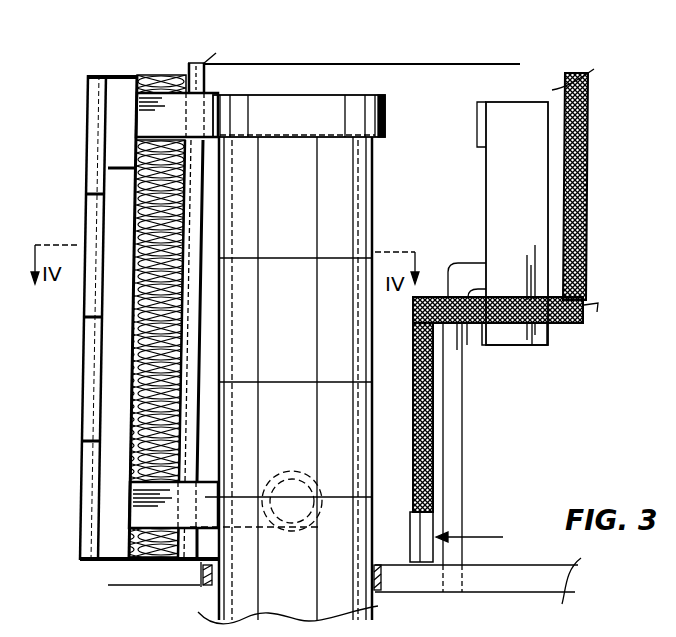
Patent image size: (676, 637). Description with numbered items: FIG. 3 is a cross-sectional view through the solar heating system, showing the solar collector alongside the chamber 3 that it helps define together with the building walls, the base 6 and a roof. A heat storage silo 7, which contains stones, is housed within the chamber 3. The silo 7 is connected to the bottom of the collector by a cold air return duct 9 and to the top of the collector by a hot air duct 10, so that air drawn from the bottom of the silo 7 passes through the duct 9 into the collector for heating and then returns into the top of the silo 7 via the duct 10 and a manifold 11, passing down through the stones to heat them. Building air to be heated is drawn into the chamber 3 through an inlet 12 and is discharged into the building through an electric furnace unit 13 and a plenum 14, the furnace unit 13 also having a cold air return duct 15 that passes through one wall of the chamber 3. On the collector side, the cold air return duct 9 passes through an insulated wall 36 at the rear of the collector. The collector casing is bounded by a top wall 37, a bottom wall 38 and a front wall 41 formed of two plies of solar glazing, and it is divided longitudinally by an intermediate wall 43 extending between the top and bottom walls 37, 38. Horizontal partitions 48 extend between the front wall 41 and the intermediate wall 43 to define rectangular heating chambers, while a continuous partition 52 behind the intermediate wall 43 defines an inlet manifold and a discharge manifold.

The chamber 3 is at (390, 553).
The base 6 is at (192, 575).
The heat storage silo 7 is at (294, 231).
The cold air return duct 9 is at (203, 503).
The hot air duct 10 is at (213, 97).
The manifold 11 is at (311, 108).
The inlet 12 is at (425, 527).
The electric furnace unit 13 is at (524, 236).
The plenum 14 is at (513, 338).
The cold air return duct 15 is at (457, 467).
The insulated wall 36 is at (200, 64).
The top wall 37 is at (119, 76).
The bottom wall 38 is at (103, 562).
The front wall 41 is at (82, 423).
The intermediate wall 43 is at (103, 393).
The horizontal partition 48 is at (92, 191).
The continuous partition 52 is at (122, 167).